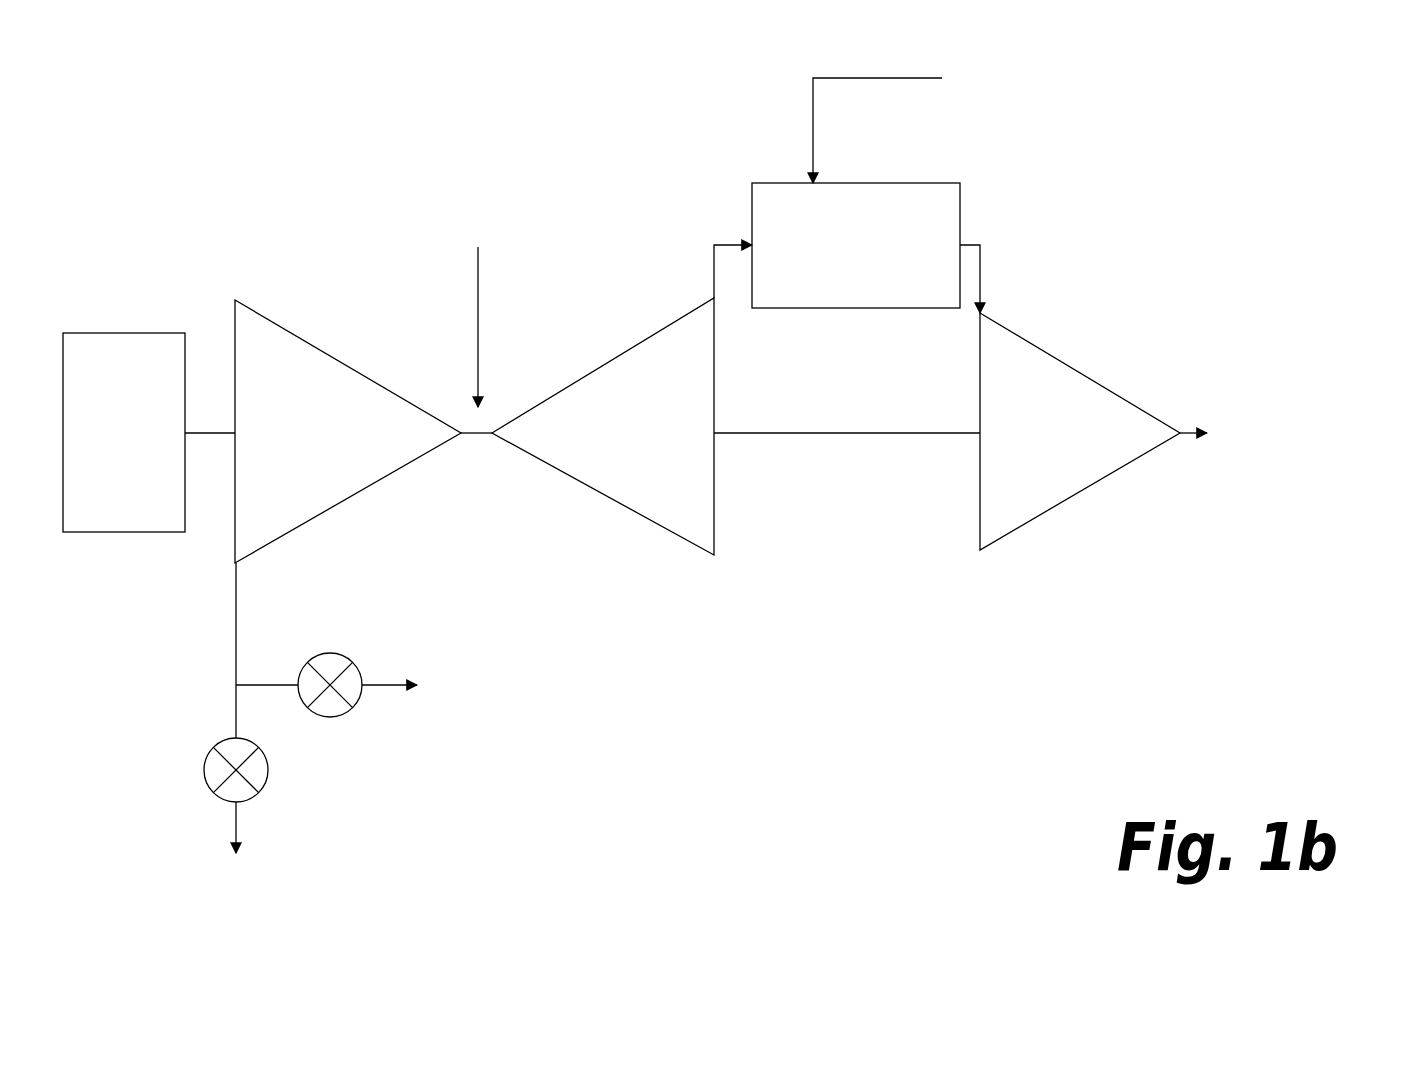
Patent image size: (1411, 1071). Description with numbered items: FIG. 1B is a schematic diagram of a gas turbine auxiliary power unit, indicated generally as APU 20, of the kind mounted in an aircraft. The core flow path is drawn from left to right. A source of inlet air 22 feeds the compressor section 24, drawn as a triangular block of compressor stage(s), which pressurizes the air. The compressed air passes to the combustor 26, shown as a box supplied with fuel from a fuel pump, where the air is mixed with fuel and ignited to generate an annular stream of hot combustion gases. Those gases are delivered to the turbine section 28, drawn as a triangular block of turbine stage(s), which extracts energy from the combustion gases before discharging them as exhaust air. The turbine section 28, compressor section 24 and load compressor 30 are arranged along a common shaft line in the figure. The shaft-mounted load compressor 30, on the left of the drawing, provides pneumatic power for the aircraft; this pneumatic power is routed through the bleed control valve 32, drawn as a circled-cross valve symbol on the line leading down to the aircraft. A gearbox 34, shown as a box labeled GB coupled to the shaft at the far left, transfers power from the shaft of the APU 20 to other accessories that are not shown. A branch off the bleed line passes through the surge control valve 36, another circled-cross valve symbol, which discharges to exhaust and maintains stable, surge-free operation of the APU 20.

The auxiliary power unit 20 is at (655, 50).
The inlet air 22 is at (501, 308).
The compressor section 24 is at (682, 540).
The combustor 26 is at (937, 183).
The turbine section 28 is at (1082, 492).
The load compressor 30 is at (275, 322).
The bleed control valve 32 is at (223, 737).
The gearbox 34 is at (112, 332).
The surge control valve 36 is at (337, 718).